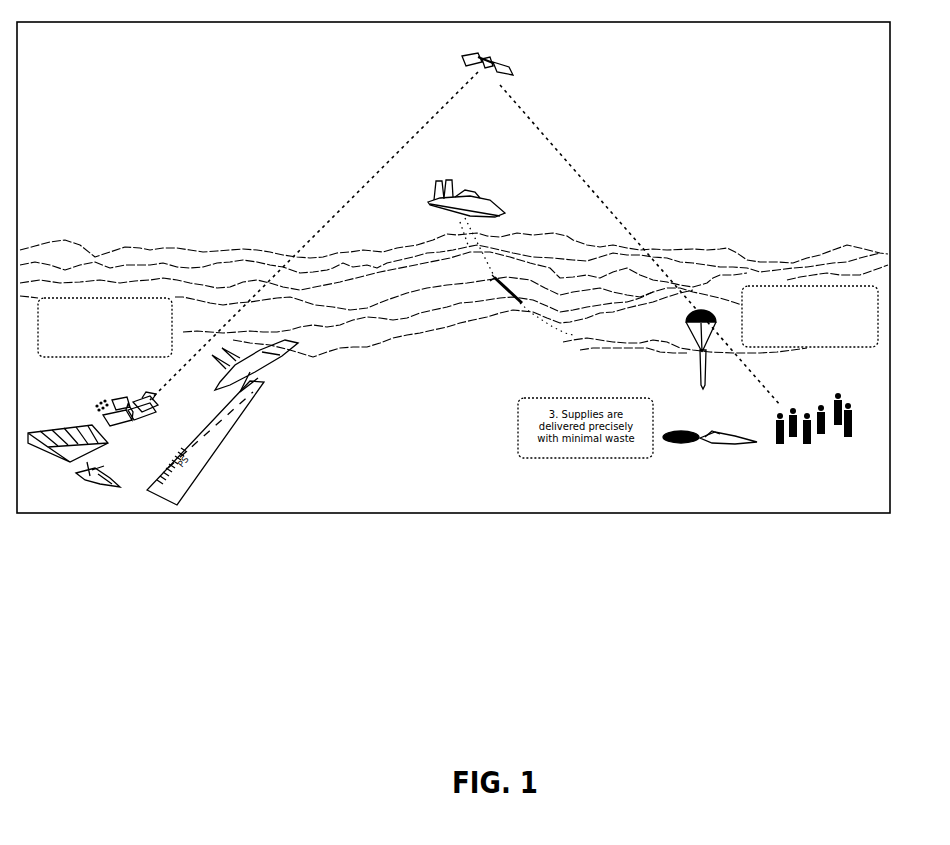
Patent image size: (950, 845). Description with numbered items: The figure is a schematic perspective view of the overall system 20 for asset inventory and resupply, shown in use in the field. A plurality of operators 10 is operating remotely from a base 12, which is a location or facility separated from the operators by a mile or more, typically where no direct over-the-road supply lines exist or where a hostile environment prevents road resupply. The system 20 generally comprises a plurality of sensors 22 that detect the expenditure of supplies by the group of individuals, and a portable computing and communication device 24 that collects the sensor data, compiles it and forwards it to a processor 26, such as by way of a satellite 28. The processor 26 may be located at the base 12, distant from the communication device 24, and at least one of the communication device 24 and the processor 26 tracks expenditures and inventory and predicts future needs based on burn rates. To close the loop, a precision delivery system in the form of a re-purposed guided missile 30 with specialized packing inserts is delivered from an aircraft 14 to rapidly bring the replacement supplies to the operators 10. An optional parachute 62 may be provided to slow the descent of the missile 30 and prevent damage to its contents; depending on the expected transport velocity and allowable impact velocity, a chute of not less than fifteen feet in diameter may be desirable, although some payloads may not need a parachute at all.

The operators 10 is at (812, 428).
The base 12 is at (97, 388).
The aircraft 14 is at (483, 200).
The system 20 is at (687, 145).
The sensors 22 is at (808, 440).
The portable computing and communication device 24 is at (790, 410).
The processor 26 is at (148, 412).
The satellite 28 is at (513, 65).
The re-purposed guided missile 30 is at (738, 447).
The parachute 62 is at (688, 447).